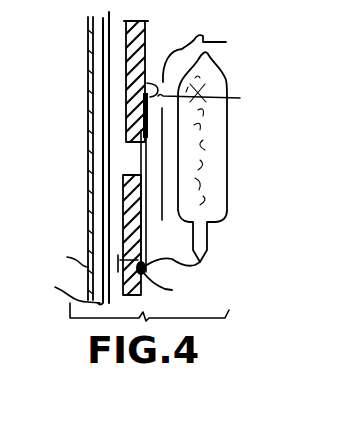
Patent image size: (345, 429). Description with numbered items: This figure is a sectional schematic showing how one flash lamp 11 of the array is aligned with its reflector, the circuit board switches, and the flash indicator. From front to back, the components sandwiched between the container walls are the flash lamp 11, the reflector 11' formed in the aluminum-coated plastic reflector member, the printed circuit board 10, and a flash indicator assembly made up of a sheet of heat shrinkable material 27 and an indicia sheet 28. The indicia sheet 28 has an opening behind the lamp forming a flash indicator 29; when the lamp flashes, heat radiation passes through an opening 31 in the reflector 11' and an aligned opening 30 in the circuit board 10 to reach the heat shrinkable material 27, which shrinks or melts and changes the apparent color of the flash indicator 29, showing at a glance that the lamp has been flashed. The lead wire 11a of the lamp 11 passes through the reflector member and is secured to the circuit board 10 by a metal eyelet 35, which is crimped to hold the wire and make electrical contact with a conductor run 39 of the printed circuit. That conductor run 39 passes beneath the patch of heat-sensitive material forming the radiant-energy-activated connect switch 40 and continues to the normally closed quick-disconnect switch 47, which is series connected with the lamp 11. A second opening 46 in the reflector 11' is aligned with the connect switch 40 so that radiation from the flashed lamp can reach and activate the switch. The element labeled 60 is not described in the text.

The printed circuit board 10 is at (146, 23).
The conductor run 39 is at (146, 42).
The reflector 11' is at (215, 54).
The connect switch 40 is at (147, 83).
The second opening 46 is at (216, 104).
The flash lamp 11 is at (220, 157).
The flash indicator 29 is at (88, 155).
The opening 31 is at (160, 156).
The member 60 is at (54, 158).
The opening 30 is at (128, 160).
The disconnect switch 47 is at (148, 164).
The indicia sheet 28 is at (62, 254).
The lead wire 11a is at (203, 265).
The heat shrinkable material sheet 27 is at (62, 288).
The metal eyelet 35 is at (176, 289).